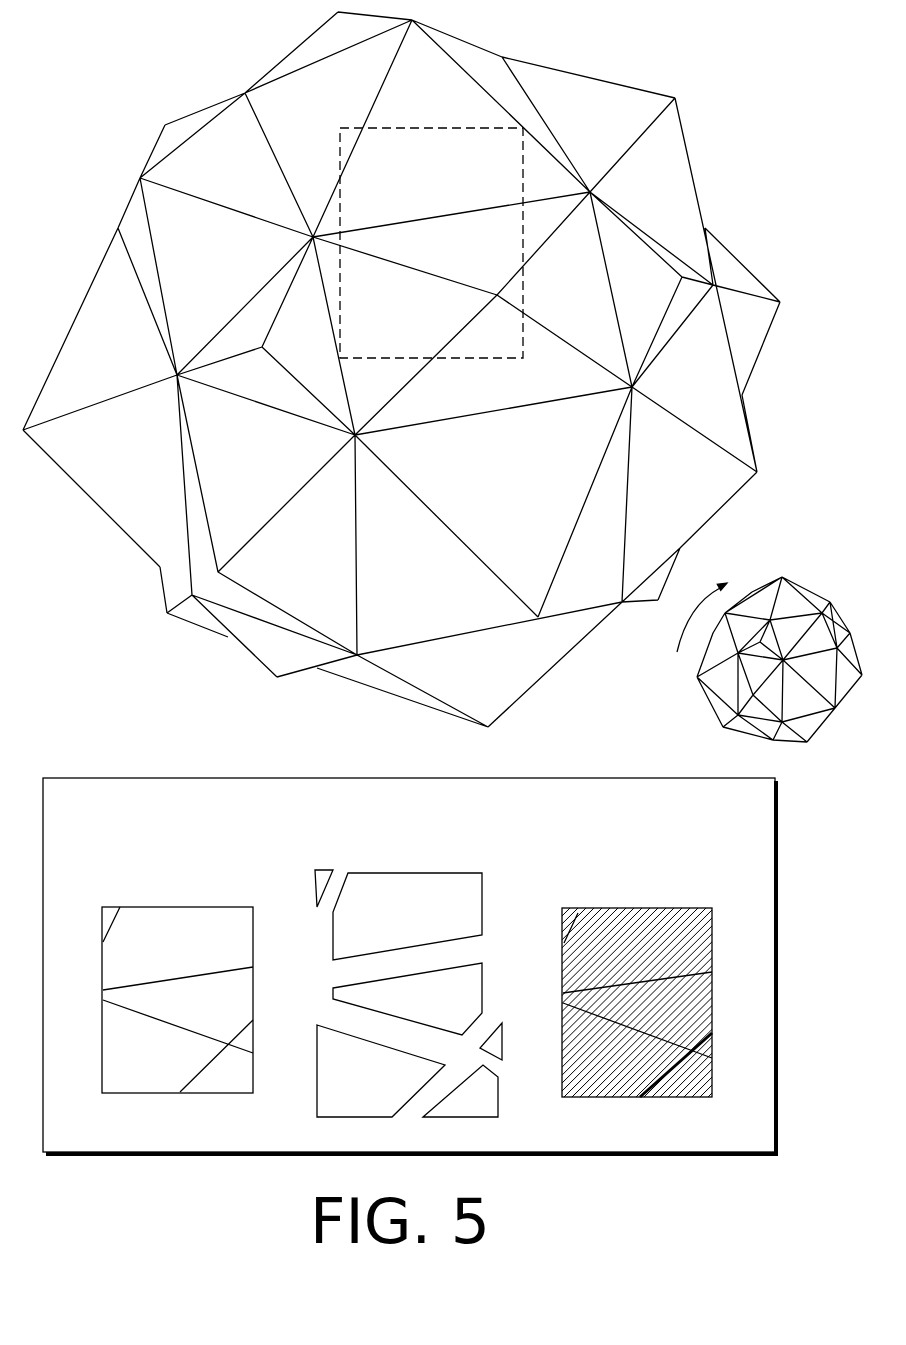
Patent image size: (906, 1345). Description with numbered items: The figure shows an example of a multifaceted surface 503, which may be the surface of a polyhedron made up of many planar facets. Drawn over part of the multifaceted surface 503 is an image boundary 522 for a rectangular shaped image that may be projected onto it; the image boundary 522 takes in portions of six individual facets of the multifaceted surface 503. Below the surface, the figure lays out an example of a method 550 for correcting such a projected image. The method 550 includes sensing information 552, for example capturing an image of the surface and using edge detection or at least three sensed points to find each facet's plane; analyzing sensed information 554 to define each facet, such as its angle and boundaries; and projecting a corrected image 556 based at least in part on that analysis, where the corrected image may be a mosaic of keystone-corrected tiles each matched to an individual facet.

The multifaceted surface 503 is at (636, 57).
The image boundary 522 is at (472, 374).
The method 550 is at (177, 822).
The sensing information 552 is at (228, 880).
The analyzing sensed information 554 is at (466, 858).
The projecting a corrected image 556 is at (695, 878).